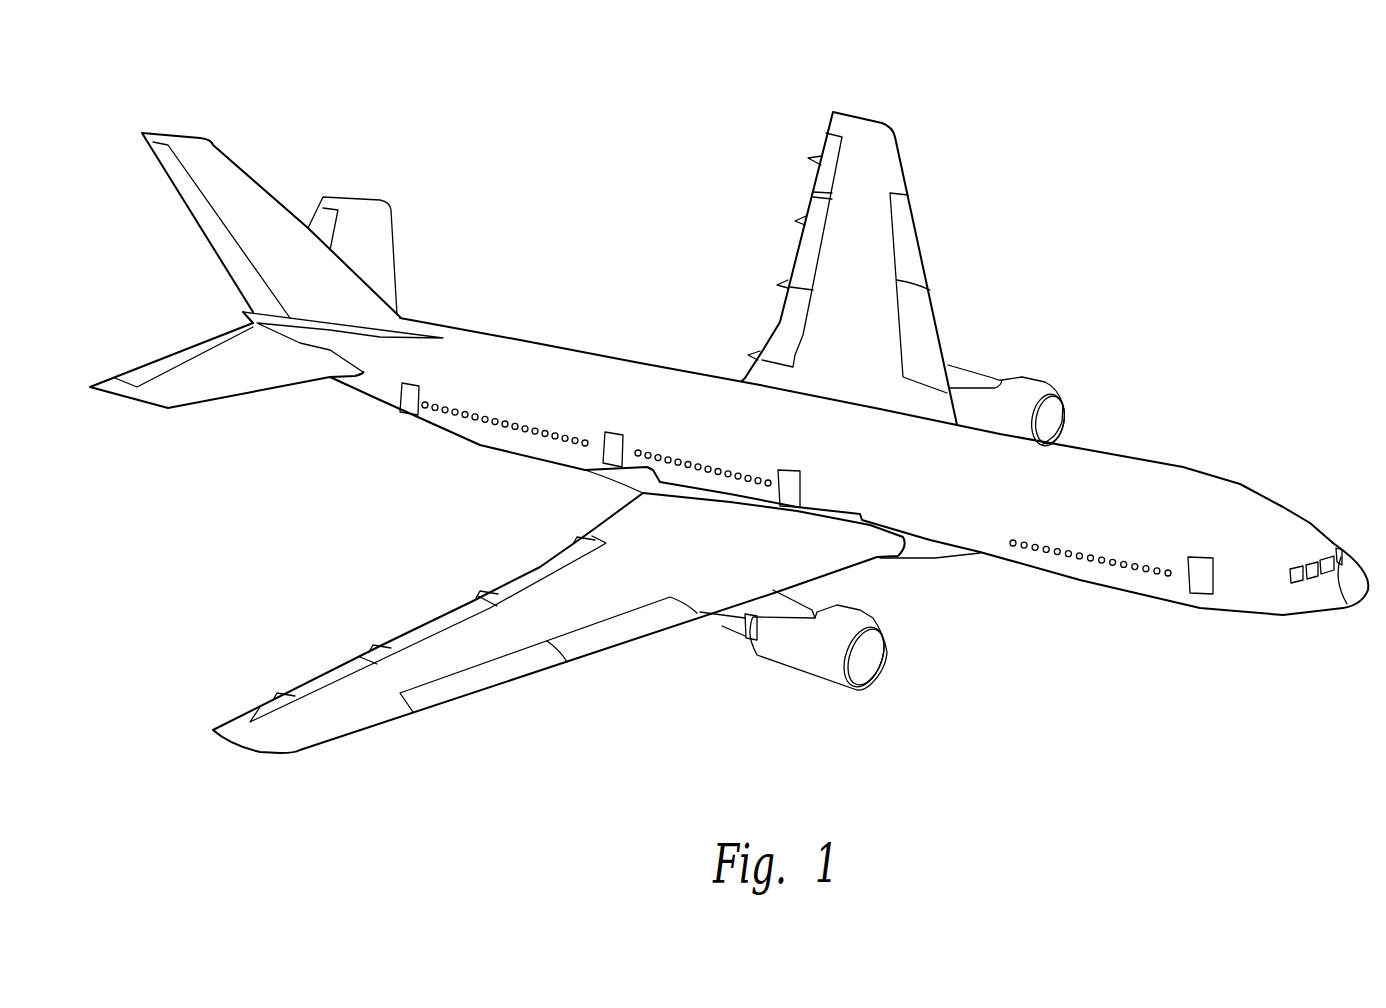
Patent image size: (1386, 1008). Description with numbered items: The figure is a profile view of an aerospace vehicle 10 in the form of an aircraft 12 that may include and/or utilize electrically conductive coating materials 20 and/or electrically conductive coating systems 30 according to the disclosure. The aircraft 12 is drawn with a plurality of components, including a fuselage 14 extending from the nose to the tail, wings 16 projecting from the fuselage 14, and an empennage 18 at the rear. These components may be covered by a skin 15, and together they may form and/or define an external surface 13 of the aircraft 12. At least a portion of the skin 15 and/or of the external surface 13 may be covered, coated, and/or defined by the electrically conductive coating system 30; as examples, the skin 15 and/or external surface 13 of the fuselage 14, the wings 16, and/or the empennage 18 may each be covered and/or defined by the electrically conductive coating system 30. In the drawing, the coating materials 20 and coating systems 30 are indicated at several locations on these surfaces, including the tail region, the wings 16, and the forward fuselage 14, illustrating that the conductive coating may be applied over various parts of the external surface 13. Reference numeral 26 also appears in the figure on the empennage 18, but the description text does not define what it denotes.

The aerospace vehicle 10 is at (1270, 178).
The aircraft 12 is at (1178, 262).
The external surface 13 is at (610, 367).
The fuselage 14 is at (1247, 615).
The skin 15 is at (528, 360).
The wings 16 is at (343, 733).
The empennage 18 is at (214, 250).
The electrically conductive coating materials 20 is at (277, 367).
The leading edge 26 is at (240, 183).
The electrically conductive coating system 30 is at (213, 160).